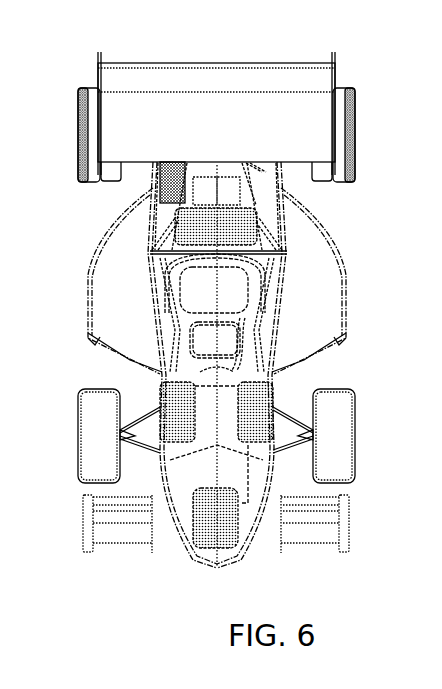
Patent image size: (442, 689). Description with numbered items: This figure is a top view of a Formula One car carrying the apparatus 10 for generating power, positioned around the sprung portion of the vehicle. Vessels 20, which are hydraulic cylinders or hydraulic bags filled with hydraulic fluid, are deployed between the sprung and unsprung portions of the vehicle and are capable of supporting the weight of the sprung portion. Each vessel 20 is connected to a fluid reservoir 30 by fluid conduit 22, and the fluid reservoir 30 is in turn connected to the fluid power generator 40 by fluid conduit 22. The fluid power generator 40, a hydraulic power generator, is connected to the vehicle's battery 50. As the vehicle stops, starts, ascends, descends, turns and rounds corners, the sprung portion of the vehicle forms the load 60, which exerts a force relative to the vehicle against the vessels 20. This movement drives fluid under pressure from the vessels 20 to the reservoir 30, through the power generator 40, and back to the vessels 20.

The apparatus 10 is at (387, 120).
The vessels 20 is at (230, 222).
The fluid conduit 22 is at (180, 307).
The fluid reservoir 30 is at (190, 186).
The fluid power generator 40 is at (176, 163).
The battery 50 is at (227, 177).
The load 60 is at (257, 478).